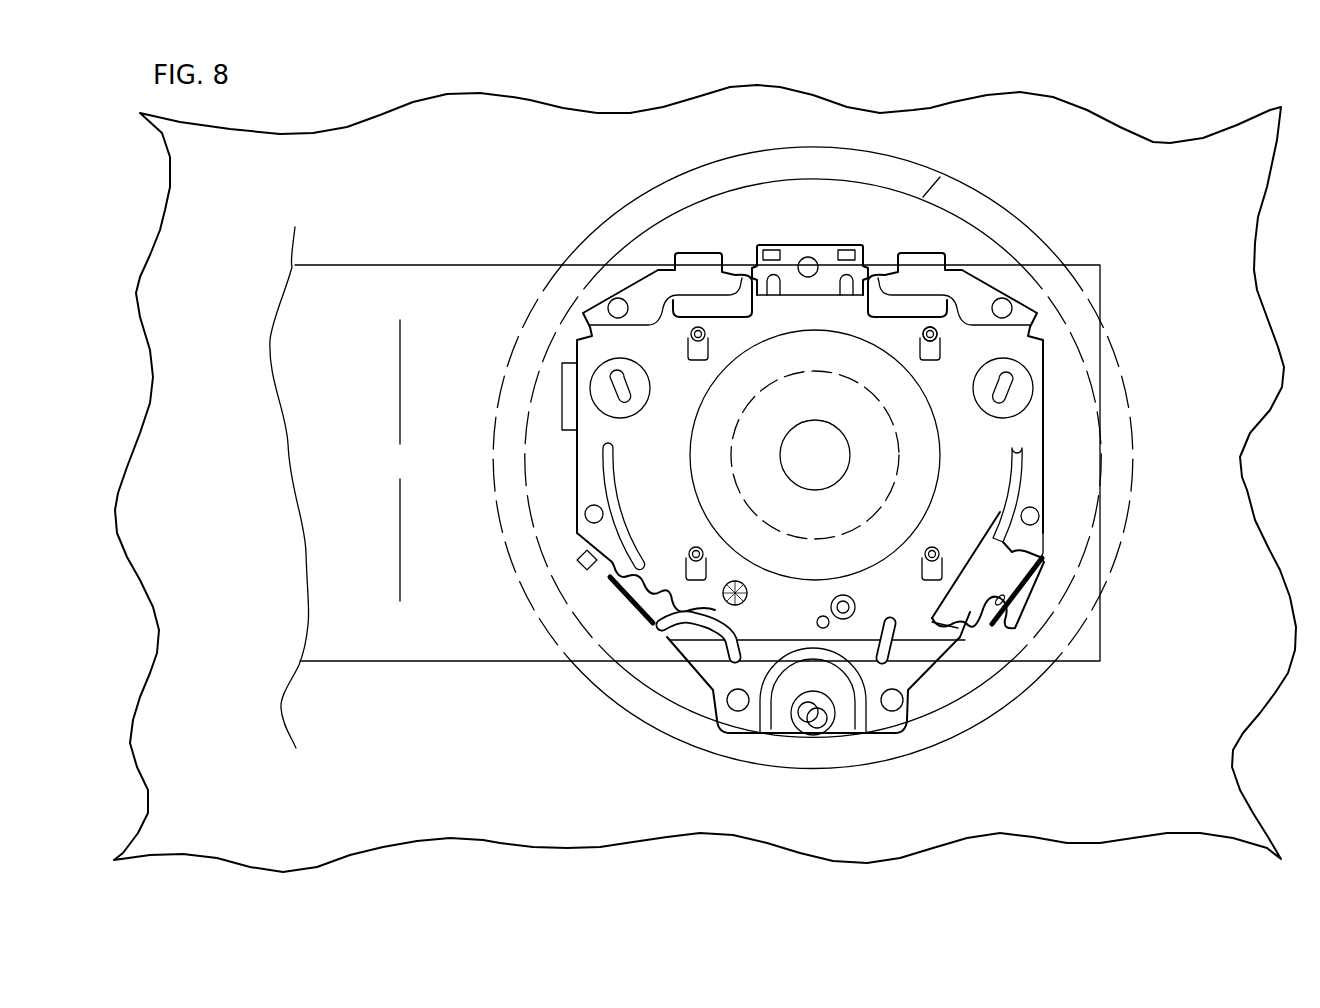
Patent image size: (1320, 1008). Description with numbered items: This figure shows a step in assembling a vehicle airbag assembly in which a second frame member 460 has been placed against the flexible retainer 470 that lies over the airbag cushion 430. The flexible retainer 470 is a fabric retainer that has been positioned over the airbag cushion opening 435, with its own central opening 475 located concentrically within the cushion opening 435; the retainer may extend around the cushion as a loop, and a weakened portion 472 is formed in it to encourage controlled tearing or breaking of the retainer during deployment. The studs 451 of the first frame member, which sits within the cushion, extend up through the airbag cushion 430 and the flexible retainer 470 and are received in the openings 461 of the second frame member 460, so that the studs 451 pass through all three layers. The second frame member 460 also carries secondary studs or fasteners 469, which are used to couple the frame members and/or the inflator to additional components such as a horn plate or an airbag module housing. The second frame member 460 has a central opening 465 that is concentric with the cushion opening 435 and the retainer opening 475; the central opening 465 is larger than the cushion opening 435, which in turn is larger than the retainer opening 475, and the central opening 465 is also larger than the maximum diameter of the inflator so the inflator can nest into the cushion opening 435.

The airbag cushion 430 is at (835, 218).
The airbag cushion opening 435 is at (905, 455).
The studs 451 is at (930, 333).
The second frame member 460 is at (910, 660).
The openings 461 is at (945, 570).
The central opening 465 is at (935, 487).
The secondary studs or fasteners 469 is at (612, 378).
The flexible retainer 470 is at (406, 639).
The weakened portion 472 is at (400, 529).
The central opening 475 is at (818, 455).